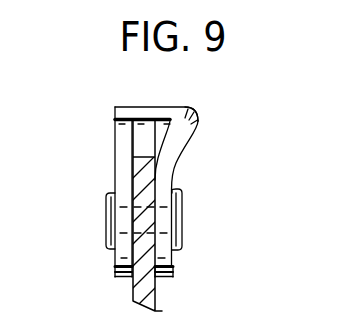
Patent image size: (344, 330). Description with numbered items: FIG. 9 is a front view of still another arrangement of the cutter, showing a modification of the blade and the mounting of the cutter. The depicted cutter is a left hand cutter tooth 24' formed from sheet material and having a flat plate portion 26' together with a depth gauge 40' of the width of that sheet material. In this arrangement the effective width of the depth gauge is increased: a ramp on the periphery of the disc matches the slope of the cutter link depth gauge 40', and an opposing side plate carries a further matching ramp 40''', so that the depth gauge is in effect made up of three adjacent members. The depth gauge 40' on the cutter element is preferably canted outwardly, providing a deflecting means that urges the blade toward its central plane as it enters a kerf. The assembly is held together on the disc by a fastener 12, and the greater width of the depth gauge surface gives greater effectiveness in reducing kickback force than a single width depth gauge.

The bolt 12 is at (132, 300).
The left hand cutter tooth 24' is at (242, 98).
The flat plate portion 26' is at (206, 259).
The depth gauge 40' is at (209, 194).
The matching ramp 40''' is at (76, 187).